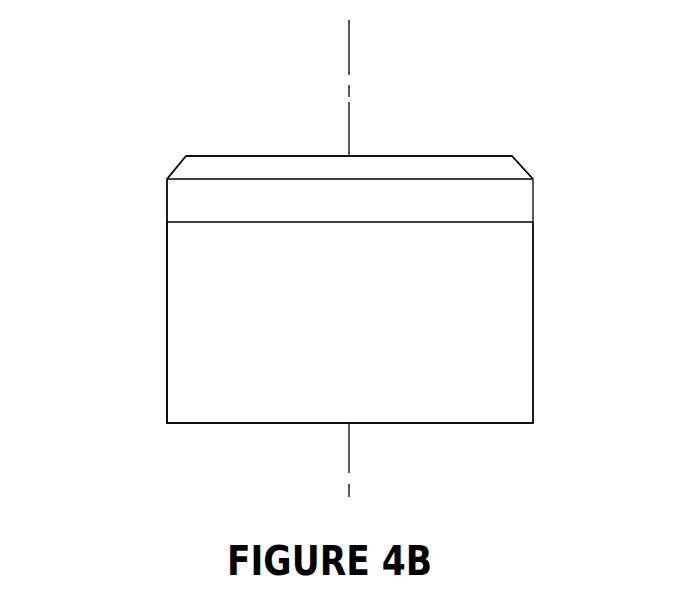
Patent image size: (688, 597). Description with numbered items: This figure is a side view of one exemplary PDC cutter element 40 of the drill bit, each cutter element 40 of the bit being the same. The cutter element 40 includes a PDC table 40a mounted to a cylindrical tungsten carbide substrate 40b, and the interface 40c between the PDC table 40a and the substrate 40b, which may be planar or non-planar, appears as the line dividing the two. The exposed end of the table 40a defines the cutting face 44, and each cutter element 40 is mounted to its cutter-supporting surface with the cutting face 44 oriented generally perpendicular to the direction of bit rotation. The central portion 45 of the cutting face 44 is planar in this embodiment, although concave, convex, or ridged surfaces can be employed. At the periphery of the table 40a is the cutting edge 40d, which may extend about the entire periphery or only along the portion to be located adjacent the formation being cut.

The cutter element 40 is at (122, 102).
The PDC table 40a is at (534, 202).
The substrate 40b is at (534, 325).
The interface 40c is at (148, 225).
The cutting edge 40d is at (520, 150).
The cutting face 44 is at (479, 145).
The central portion 45 is at (394, 156).